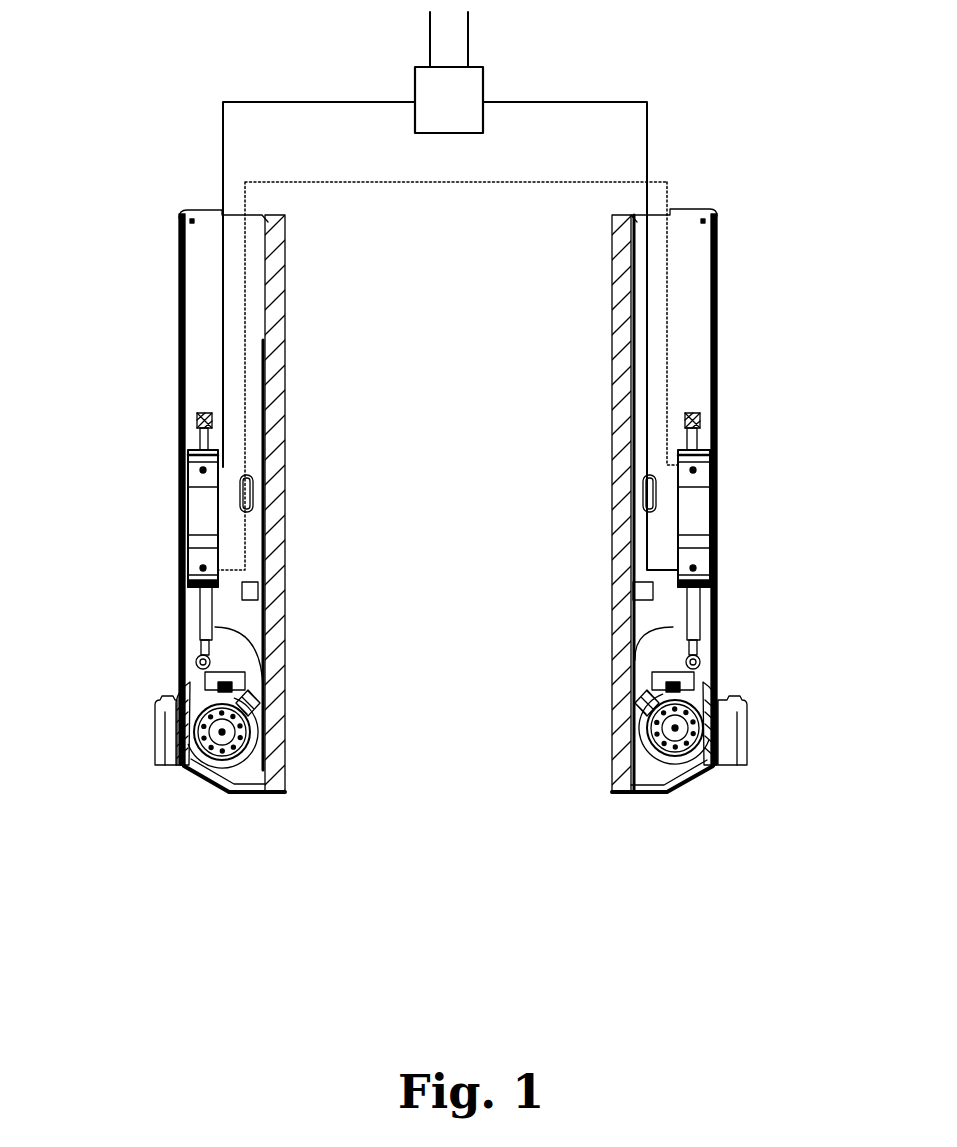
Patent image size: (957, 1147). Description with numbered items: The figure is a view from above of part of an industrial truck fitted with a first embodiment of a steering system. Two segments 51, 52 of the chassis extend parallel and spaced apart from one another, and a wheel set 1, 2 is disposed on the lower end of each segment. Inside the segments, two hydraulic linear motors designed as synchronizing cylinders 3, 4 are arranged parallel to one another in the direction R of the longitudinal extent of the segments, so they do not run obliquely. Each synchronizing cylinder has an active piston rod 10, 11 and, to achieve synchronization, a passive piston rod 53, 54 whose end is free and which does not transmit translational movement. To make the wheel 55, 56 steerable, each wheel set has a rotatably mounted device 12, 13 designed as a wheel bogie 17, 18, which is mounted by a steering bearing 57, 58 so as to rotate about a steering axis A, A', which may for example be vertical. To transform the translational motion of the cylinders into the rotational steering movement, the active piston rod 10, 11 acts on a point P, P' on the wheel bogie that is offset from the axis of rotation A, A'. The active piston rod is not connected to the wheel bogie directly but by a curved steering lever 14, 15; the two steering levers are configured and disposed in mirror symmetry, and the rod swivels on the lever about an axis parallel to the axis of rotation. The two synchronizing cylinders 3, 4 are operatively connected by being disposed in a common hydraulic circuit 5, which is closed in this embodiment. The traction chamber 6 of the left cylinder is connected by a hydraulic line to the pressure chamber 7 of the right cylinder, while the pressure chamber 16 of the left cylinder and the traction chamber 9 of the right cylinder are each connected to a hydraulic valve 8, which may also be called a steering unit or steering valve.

The wheel set 1 is at (117, 746).
The wheel set 2 is at (769, 735).
The synchronizing cylinder 3 is at (161, 526).
The synchronizing cylinder 4 is at (728, 517).
The hydraulic circuit 5 is at (520, 186).
The traction chamber 6 is at (188, 566).
The pressure chamber 7 is at (712, 462).
The hydraulic valve 8 is at (414, 90).
The traction chamber 9 is at (712, 565).
The active piston rod 10 is at (204, 621).
The active piston rod 11 is at (700, 617).
The rotatably mounted device 12 is at (282, 777).
The rotatably mounted device 13 is at (701, 789).
The steering lever 14 is at (176, 690).
The steering lever 15 is at (715, 664).
The pressure chamber 16 is at (186, 472).
The wheel bogie 17 is at (243, 760).
The wheel bogie 18 is at (694, 768).
The segment 51 is at (197, 300).
The segment 52 is at (692, 322).
The passive piston rod 53 is at (183, 433).
The passive piston rod 54 is at (712, 430).
The wheel 55 is at (163, 758).
The wheel 56 is at (740, 757).
The steering bearing 57 is at (256, 713).
The steering bearing 58 is at (640, 701).
The point P is at (176, 815).
The point P' is at (743, 803).
The steering axis A is at (229, 822).
The steering axis A' is at (661, 820).
The direction R is at (42, 448).